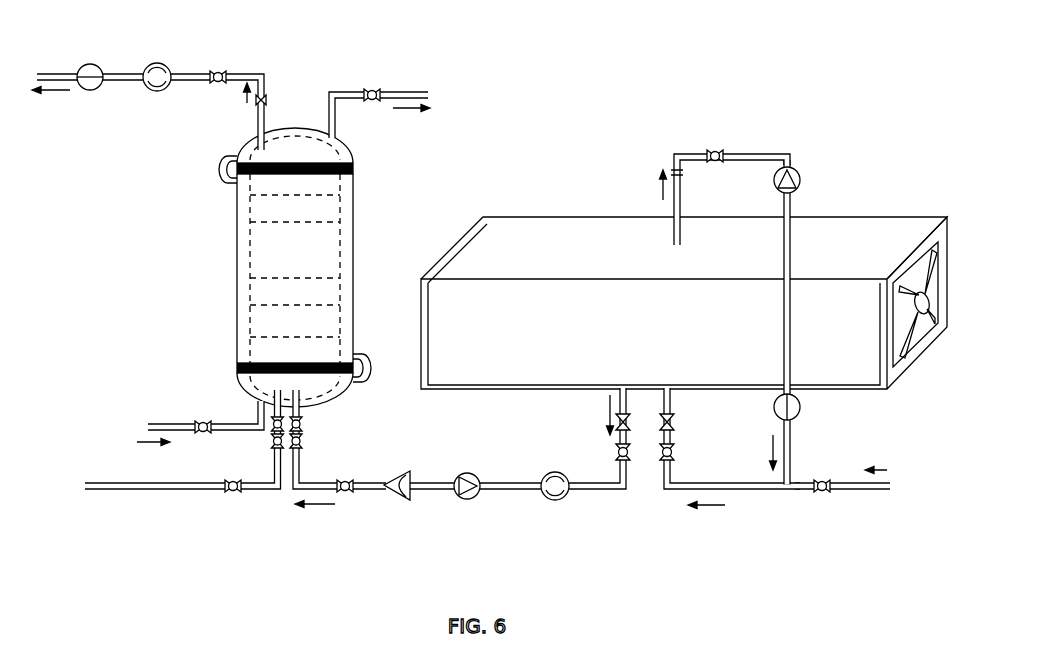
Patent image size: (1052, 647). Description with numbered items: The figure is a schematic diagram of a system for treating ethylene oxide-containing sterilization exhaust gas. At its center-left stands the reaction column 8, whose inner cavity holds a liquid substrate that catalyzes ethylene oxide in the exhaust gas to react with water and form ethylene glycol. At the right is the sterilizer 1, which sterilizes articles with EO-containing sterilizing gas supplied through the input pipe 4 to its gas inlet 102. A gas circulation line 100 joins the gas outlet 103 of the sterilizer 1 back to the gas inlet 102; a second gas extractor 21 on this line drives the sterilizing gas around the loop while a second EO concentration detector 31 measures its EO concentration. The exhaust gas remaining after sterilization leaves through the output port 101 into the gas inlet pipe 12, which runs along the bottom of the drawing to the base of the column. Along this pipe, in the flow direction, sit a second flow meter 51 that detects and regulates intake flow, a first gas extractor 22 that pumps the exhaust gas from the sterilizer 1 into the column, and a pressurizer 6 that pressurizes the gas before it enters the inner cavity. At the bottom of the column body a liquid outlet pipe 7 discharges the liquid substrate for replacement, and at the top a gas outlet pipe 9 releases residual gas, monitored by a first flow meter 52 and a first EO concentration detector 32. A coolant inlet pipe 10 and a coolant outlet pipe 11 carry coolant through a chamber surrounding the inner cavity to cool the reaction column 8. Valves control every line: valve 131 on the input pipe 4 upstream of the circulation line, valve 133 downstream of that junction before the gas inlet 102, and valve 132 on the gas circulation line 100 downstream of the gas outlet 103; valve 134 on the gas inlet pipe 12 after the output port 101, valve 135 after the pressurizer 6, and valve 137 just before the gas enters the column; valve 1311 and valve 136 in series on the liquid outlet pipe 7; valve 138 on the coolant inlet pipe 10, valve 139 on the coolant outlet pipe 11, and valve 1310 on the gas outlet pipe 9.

The sterilizer 1 is at (873, 223).
The input pipe 4 is at (870, 493).
The pressurizer 6 is at (394, 496).
The liquid outlet pipe 7 is at (172, 490).
The reaction column 8 is at (357, 193).
The gas outlet pipe 9 is at (62, 74).
The coolant inlet pipe 10 is at (158, 423).
The coolant outlet pipe 11 is at (425, 88).
The gas inlet pipe 12 is at (302, 456).
The second gas extractor 21 is at (795, 172).
The first gas extractor 22 is at (473, 498).
The second EO concentration detector 31 is at (796, 412).
The first EO concentration detector 32 is at (96, 66).
The second flow meter 51 is at (570, 498).
The first flow meter 52 is at (168, 64).
The gas circulation line 100 is at (793, 218).
The output port 101 is at (614, 410).
The gas inlet 102 is at (672, 393).
The gas outlet 103 is at (668, 245).
The valve 131 is at (818, 494).
The valve 132 is at (720, 146).
The valve 133 is at (674, 438).
The valve 134 is at (617, 452).
The valve 135 is at (348, 493).
The valve 136 is at (238, 493).
The valve 137 is at (303, 432).
The valve 138 is at (205, 420).
The valve 139 is at (358, 87).
The valve 1310 is at (222, 70).
The valve 1311 is at (271, 443).